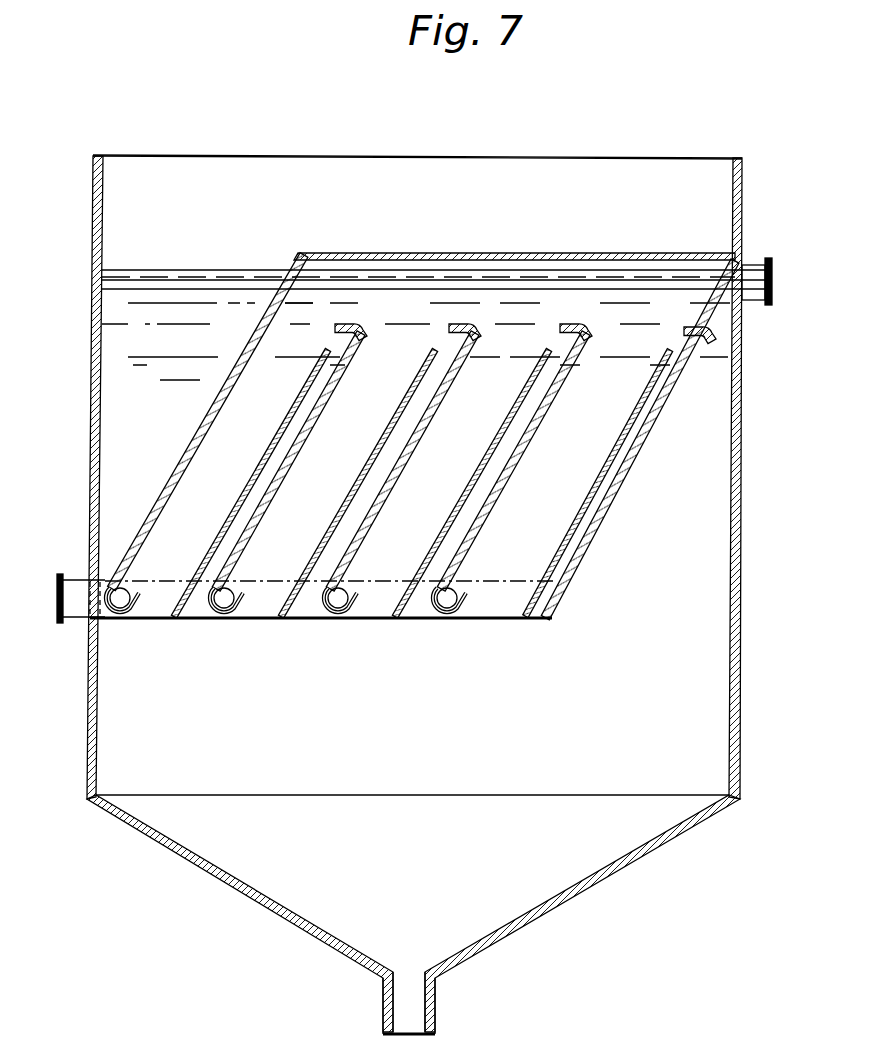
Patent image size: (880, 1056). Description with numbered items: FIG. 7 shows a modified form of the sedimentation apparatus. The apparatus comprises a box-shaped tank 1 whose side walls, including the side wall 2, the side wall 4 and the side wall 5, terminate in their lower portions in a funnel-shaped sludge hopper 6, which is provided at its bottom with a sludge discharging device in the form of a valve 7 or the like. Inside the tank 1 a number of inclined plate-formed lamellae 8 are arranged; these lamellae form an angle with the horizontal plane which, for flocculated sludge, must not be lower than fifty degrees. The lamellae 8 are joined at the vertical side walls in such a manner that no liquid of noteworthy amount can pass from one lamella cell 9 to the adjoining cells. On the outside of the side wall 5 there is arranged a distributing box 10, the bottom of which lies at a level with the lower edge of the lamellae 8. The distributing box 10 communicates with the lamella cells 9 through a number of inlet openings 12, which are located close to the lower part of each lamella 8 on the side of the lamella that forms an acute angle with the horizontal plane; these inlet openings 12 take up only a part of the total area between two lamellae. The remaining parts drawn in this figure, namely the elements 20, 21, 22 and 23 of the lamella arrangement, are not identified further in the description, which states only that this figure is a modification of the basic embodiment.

The box-shaped tank 1 is at (700, 153).
The side wall 2 is at (92, 399).
The side wall 4 is at (744, 468).
The side wall 5 is at (470, 158).
The funnel-shaped sludge hopper 6 is at (254, 903).
The valve 7 is at (437, 1021).
The inclined plate-formed lamellae 8 is at (197, 437).
The lamella cell 9 is at (262, 411).
The distributing box 10 is at (165, 579).
The inlet openings 12 is at (214, 607).
The intermediate thin plates 20 is at (248, 492).
The upper hook lips 21 is at (459, 323).
The lower clamping hooks 22 is at (249, 600).
The flow channel 23 is at (293, 450).